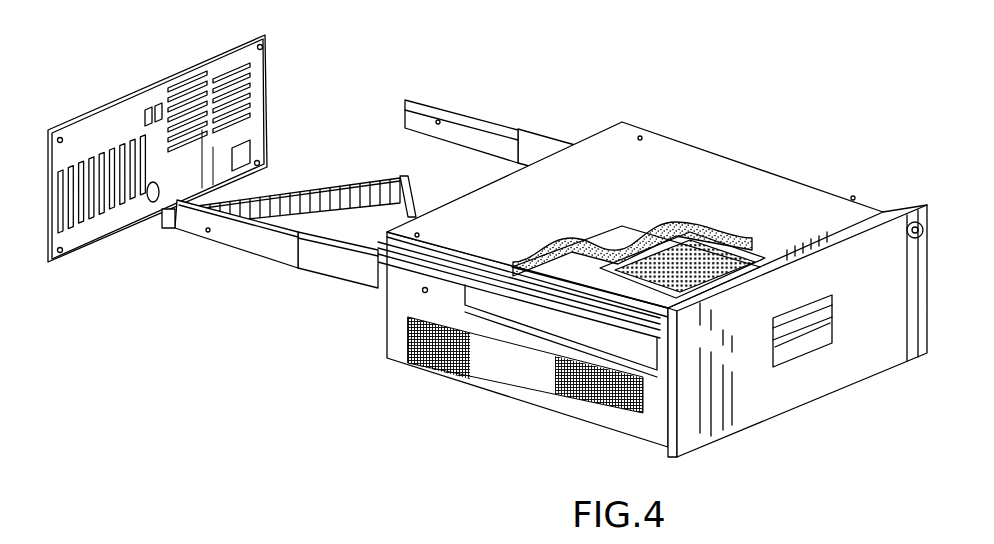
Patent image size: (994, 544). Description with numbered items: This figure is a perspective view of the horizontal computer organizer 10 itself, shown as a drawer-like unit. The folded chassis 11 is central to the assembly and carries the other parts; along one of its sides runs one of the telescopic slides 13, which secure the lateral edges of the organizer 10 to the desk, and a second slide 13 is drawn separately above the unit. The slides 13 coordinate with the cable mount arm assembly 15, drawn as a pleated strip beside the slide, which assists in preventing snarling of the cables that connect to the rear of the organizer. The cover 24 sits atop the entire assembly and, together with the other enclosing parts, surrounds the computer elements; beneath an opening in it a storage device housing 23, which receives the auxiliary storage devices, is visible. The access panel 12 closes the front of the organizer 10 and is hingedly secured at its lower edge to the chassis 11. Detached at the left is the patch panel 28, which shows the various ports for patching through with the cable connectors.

The organizer 10 is at (459, 178).
The chassis 11 is at (397, 313).
The access panel 12 is at (888, 347).
The telescopic slides 13 is at (497, 122).
The cable mount arm assembly 15 is at (280, 192).
The storage device housing 23 is at (613, 257).
The cover 24 is at (655, 167).
The patch panel 28 is at (167, 87).